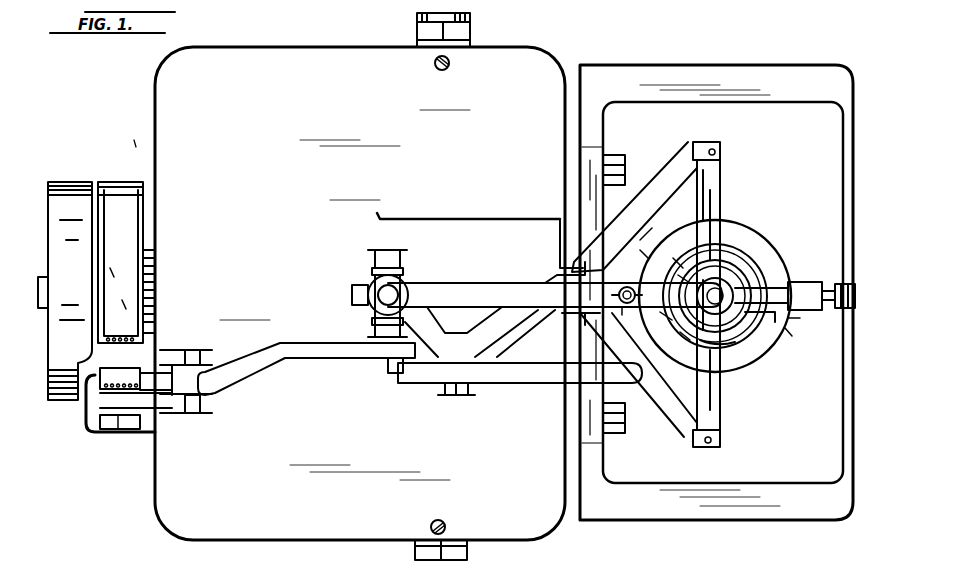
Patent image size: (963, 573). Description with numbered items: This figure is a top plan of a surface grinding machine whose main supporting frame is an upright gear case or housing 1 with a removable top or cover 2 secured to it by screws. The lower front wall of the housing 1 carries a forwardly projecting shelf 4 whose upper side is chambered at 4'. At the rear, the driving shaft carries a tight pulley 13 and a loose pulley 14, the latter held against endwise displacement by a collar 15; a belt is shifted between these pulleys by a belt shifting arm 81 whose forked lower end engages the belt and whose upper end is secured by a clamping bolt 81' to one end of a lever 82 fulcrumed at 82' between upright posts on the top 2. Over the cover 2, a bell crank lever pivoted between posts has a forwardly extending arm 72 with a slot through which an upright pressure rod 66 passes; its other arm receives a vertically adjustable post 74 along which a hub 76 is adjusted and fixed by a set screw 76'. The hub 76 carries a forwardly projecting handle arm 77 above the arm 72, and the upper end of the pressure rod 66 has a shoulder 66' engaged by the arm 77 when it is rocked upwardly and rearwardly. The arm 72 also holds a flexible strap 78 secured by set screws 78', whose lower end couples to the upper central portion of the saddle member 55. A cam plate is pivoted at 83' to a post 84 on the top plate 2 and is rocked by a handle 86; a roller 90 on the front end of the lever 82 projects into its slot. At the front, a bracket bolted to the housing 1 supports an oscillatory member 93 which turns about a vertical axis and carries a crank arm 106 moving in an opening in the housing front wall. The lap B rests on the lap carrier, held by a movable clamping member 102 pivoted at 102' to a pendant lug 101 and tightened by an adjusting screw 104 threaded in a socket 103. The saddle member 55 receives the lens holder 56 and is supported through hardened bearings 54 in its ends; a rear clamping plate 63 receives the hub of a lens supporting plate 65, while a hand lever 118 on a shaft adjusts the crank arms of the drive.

The gear case or housing 1 is at (133, 133).
The removable top or cover 2 is at (360, 303).
The shelf 4 is at (716, 309).
The chamber 4' is at (723, 328).
The tight pulley 13 is at (126, 247).
The loose pulley 14 is at (72, 182).
The collar 15 is at (43, 277).
The hardened bearings 54 is at (752, 280).
The saddle member 55 is at (721, 201).
The lens holder 56 is at (668, 318).
The clamping plate 63 is at (683, 337).
The lens supporting plate 65 is at (780, 284).
The pressure rod 66 is at (623, 322).
The shoulder 66' is at (640, 282).
The arm 72 is at (499, 325).
The post 74 is at (385, 291).
The hub 76 is at (400, 285).
The set screw 76' is at (343, 295).
The handle arm 77 is at (482, 292).
The flexible strap 78 is at (710, 287).
The set screws 78' is at (762, 327).
The belt shifting arm 81 is at (120, 415).
The clamping bolt 81' is at (128, 435).
The lever 82 is at (293, 355).
The fulcrum / upright posts 82' is at (156, 420).
The pivot 83' is at (447, 401).
The post 84 is at (457, 397).
The handle 86 is at (592, 375).
The roller 90 is at (397, 373).
The oscillatory member 93 is at (748, 246).
The pendant lug 101 is at (805, 296).
The movable clamping member 102 is at (813, 338).
The pivot 102' is at (810, 353).
The threaded socket 103 is at (808, 311).
The adjusting screw 104 is at (838, 285).
The crank arm 106 is at (657, 224).
The hand lever 118 is at (452, 40).
The lap B is at (673, 258).